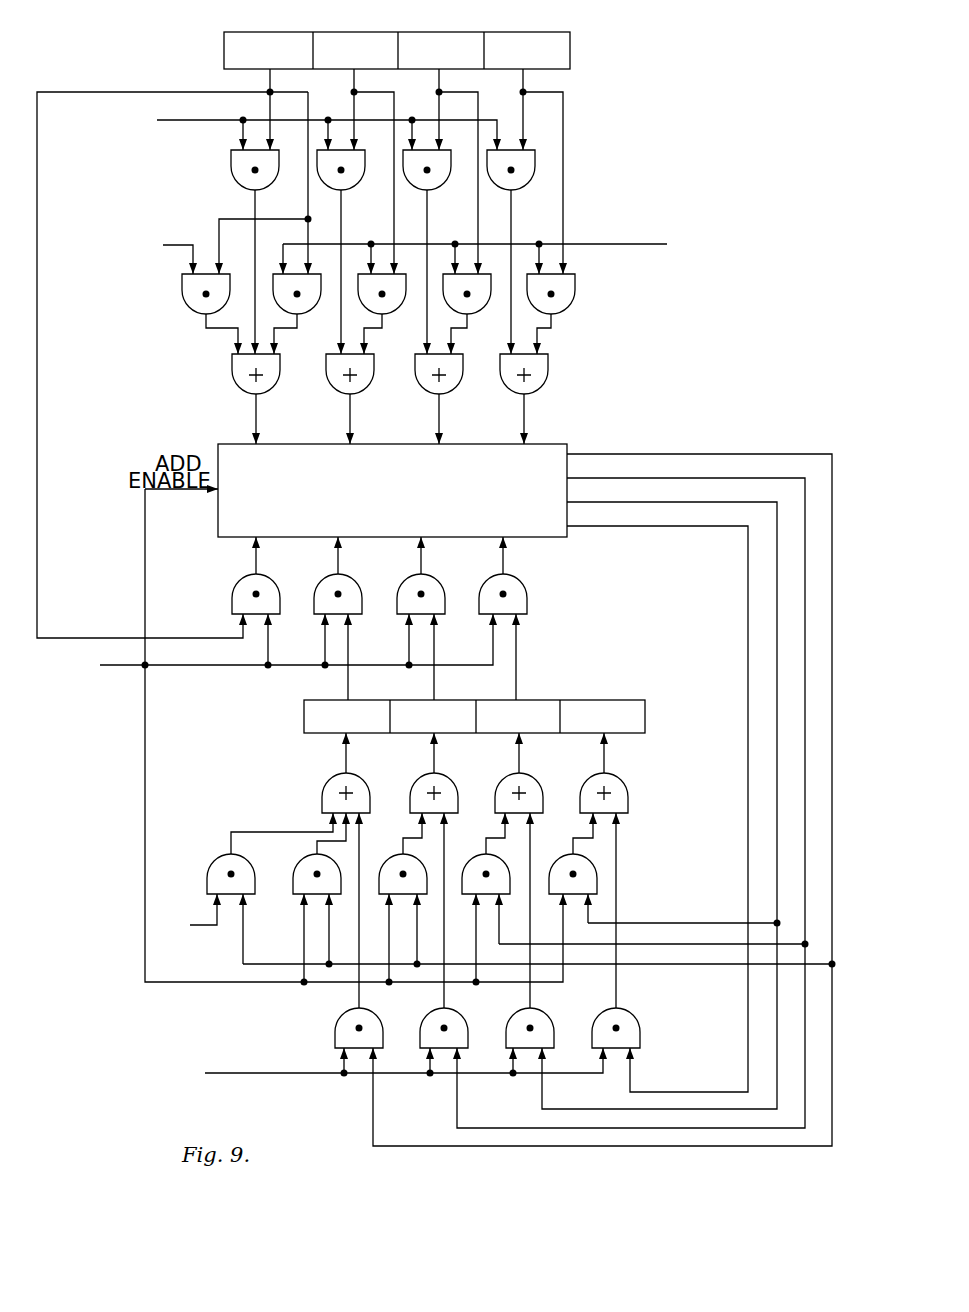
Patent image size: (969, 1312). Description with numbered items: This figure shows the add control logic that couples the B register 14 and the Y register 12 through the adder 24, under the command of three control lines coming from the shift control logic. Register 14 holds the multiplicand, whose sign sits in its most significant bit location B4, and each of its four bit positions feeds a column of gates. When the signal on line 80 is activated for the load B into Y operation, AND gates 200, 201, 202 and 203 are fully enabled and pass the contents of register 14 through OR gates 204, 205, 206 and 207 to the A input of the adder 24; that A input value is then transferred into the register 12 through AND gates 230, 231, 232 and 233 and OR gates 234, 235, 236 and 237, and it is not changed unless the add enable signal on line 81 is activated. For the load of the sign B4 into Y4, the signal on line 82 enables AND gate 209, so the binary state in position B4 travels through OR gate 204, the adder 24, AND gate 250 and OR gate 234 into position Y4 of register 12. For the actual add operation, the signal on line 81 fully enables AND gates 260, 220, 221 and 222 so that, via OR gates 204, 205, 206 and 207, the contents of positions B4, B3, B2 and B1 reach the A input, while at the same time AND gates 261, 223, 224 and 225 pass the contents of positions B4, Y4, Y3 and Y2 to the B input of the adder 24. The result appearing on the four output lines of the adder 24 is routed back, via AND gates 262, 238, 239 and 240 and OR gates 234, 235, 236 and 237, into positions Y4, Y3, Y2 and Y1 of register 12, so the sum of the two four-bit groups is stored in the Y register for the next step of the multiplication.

The register 14 is at (565, 33).
The register 12 is at (308, 703).
The adder 24 is at (238, 450).
The line 80 is at (367, 597).
The line 81 is at (382, 455).
The line 82 is at (177, 586).
The AND gate 200 is at (231, 165).
The AND gate 201 is at (355, 187).
The AND gate 202 is at (440, 187).
The AND gate 203 is at (524, 187).
The AND gate 209 is at (185, 308).
The AND gate 260 is at (304, 311).
The AND gate 220 is at (391, 311).
The AND gate 221 is at (478, 310).
The AND gate 222 is at (570, 302).
The OR gate 204 is at (270, 390).
The OR gate 205 is at (364, 390).
The OR gate 206 is at (453, 390).
The OR gate 207 is at (540, 385).
The AND gate 261 is at (268, 583).
The AND gate 223 is at (350, 583).
The AND gate 224 is at (433, 583).
The AND gate 225 is at (518, 590).
The OR gate 234 is at (360, 778).
The OR gate 235 is at (448, 778).
The OR gate 236 is at (533, 778).
The OR gate 237 is at (618, 778).
The AND gate 250 is at (220, 858).
The AND gate 262 is at (303, 857).
The AND gate 238 is at (386, 860).
The AND gate 239 is at (470, 860).
The AND gate 240 is at (558, 860).
The AND gate 230 is at (386, 998).
The AND gate 231 is at (470, 998).
The AND gate 232 is at (556, 998).
The AND gate 233 is at (642, 998).